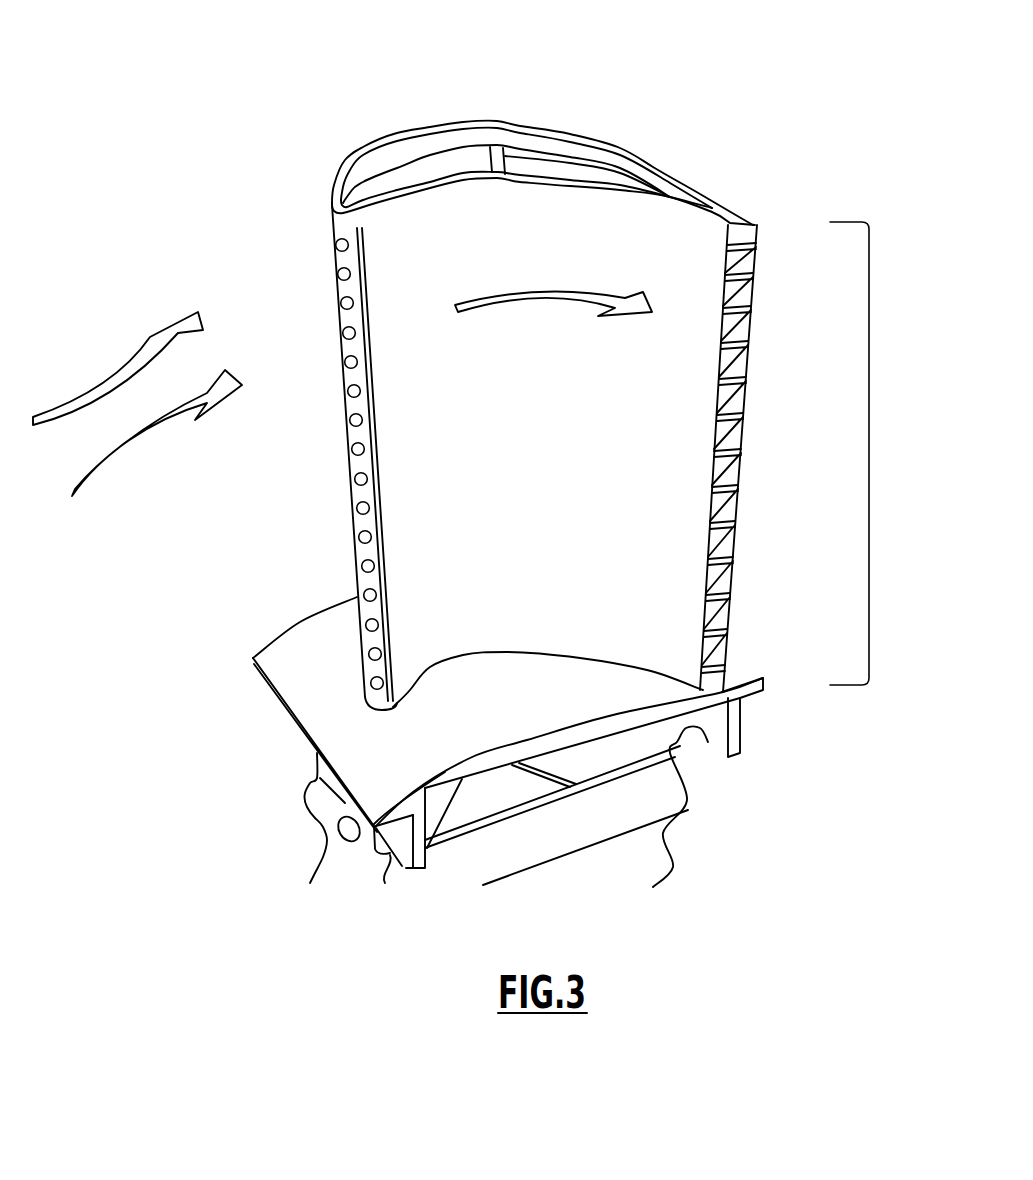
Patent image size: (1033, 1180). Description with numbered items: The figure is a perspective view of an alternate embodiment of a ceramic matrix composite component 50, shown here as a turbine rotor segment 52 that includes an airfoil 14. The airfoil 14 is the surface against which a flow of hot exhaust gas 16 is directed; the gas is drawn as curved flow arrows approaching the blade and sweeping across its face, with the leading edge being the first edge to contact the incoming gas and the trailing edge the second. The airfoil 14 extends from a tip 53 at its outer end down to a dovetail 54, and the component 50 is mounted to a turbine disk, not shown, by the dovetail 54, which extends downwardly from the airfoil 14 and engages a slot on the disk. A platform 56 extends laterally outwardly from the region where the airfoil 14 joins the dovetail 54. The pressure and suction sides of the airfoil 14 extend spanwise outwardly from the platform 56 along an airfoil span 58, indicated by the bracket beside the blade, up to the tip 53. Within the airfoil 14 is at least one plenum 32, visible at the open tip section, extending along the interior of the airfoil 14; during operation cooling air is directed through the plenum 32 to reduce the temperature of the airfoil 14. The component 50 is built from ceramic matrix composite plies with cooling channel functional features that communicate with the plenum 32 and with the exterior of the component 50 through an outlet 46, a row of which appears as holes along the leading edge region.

The component 50 is at (439, 444).
The turbine rotor segment 52 is at (521, 370).
The plenum 32 is at (408, 167).
The tip 53 is at (330, 223).
The outlet 46 is at (346, 307).
The airfoil 14 is at (665, 465).
The flow of hot exhaust gas 16 is at (102, 387).
The platform 56 is at (283, 670).
The dovetail 54 is at (343, 802).
The airfoil span 58 is at (870, 432).